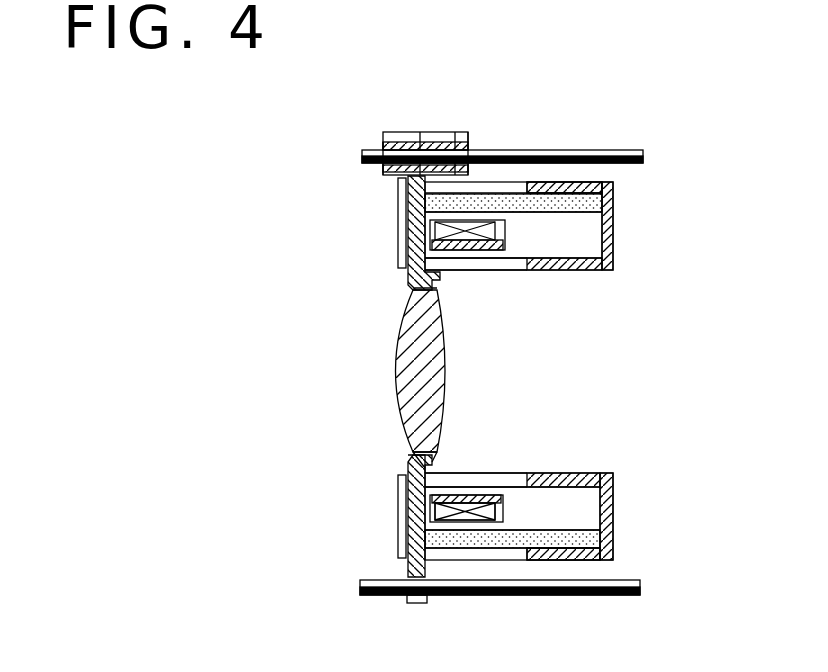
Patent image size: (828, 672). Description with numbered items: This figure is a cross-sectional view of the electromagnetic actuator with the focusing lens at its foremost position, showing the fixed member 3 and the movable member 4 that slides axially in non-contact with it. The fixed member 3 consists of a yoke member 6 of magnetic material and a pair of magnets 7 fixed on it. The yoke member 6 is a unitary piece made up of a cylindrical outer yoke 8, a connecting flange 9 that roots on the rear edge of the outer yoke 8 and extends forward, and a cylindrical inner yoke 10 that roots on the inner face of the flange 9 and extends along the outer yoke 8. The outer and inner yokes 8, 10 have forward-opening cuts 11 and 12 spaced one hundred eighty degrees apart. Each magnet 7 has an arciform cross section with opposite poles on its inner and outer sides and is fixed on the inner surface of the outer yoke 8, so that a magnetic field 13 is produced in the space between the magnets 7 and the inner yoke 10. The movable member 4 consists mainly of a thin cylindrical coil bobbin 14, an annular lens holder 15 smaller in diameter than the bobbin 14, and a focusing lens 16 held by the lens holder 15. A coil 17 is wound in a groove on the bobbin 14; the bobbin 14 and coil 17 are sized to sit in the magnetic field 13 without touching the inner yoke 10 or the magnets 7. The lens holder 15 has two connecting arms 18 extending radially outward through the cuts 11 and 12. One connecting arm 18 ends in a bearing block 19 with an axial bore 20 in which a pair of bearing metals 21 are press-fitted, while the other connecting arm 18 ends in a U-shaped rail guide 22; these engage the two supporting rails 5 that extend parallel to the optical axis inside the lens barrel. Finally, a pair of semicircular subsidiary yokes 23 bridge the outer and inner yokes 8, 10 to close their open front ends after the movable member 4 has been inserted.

The fixed member 3 is at (620, 477).
The movable member 4 is at (400, 461).
The supporting rails 5 is at (548, 150).
The yoke member 6 is at (615, 203).
The magnets 7 is at (602, 182).
The outer yoke 8 is at (567, 182).
The connecting flange 9 is at (613, 233).
The inner yoke 10 is at (580, 272).
The cuts 11 is at (520, 182).
The cuts 12 is at (525, 265).
The magnetic field 13 is at (570, 245).
The coil bobbin 14 is at (462, 490).
The lens holder 15 is at (408, 455).
The focusing lens 16 is at (397, 360).
The coil 17 is at (477, 220).
The connecting arms 18 is at (415, 240).
The bearing block 19 is at (420, 132).
The bore 20 is at (410, 132).
The bearing metals 21 is at (383, 142).
The rail guide 22 is at (412, 603).
The subsidiary yokes 23 is at (400, 222).